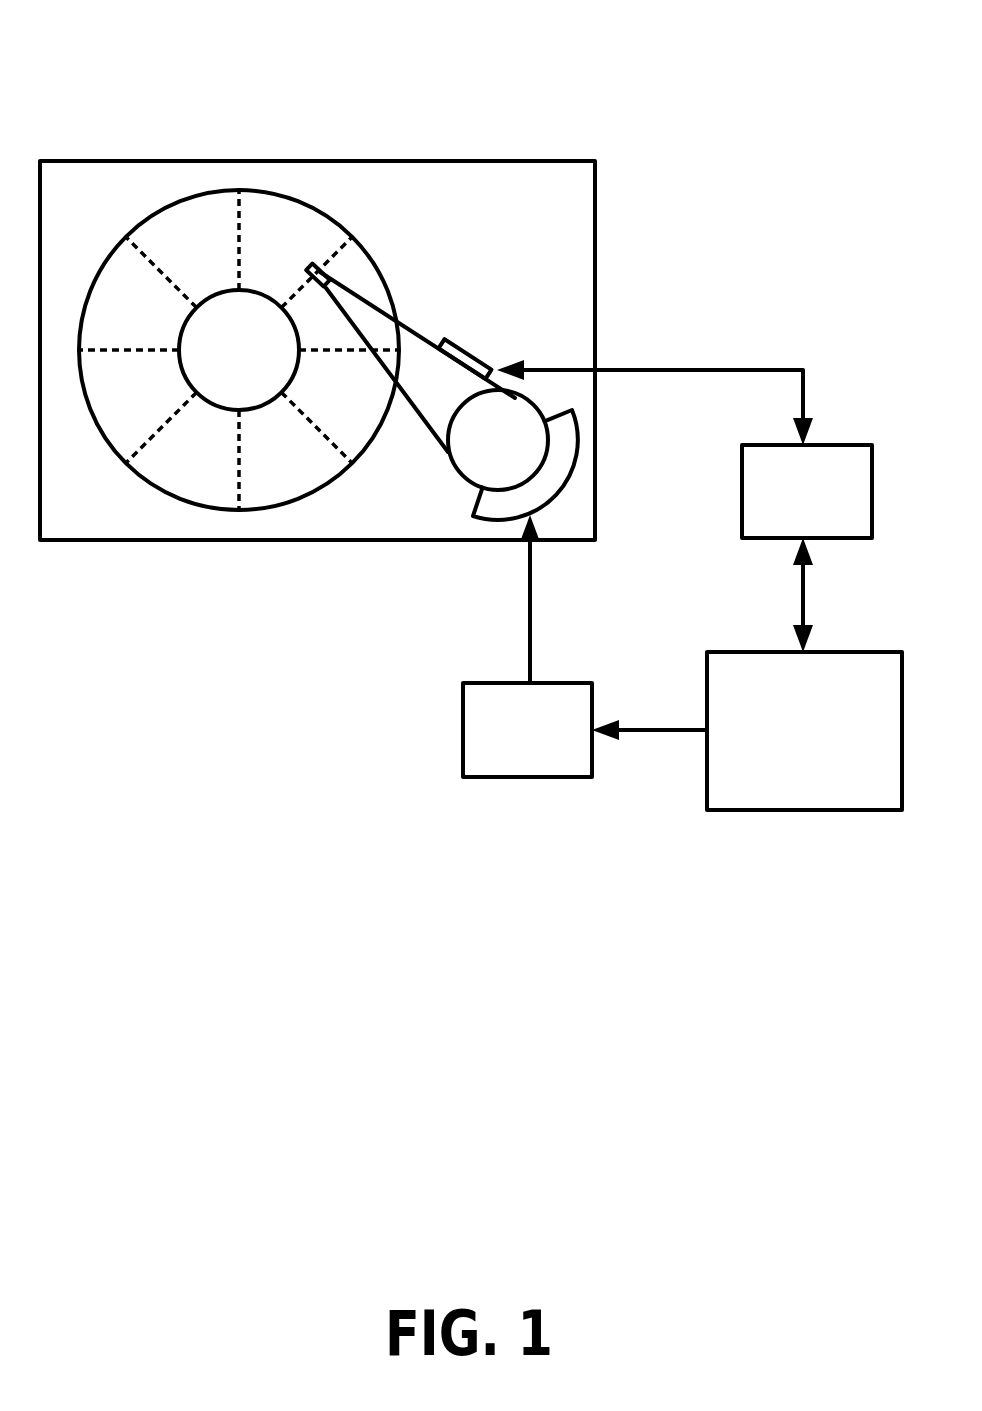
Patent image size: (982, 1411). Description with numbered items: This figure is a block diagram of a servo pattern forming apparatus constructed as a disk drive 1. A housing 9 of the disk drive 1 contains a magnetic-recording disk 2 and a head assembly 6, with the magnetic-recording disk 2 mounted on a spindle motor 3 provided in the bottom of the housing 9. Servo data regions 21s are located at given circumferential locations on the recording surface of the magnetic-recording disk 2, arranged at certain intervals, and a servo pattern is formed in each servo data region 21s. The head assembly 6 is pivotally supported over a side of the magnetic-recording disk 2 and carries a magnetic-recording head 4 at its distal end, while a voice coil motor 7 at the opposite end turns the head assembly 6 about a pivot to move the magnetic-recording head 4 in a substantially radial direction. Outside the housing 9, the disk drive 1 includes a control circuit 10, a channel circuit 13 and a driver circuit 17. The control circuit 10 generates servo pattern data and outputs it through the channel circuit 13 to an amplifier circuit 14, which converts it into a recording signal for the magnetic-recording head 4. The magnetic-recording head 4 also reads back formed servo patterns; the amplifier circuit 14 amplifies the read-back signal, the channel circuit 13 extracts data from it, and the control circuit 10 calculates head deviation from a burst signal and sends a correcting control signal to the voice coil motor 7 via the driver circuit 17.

The disk drive 1 is at (790, 58).
The magnetic-recording disk 2 is at (163, 233).
The spindle motor 3 is at (220, 347).
The magnetic-recording head 4 is at (310, 265).
The head assembly 6 is at (432, 424).
The voice coil motor 7 is at (485, 508).
The housing 9 is at (498, 161).
The control circuit 10 is at (853, 652).
The channel circuit 13 is at (854, 445).
The amplifier circuit 14 is at (462, 345).
The driver circuit 17 is at (526, 777).
The servo data region 21s is at (240, 475).